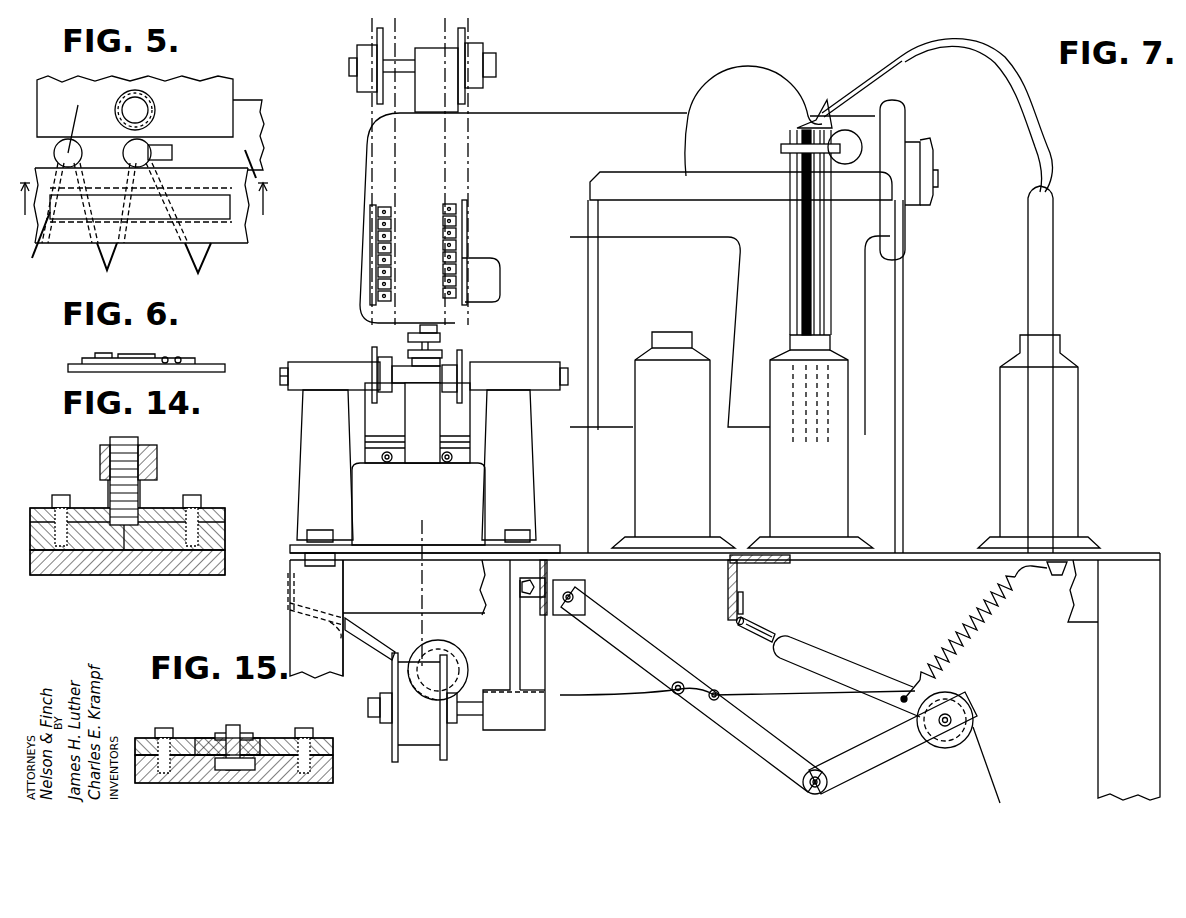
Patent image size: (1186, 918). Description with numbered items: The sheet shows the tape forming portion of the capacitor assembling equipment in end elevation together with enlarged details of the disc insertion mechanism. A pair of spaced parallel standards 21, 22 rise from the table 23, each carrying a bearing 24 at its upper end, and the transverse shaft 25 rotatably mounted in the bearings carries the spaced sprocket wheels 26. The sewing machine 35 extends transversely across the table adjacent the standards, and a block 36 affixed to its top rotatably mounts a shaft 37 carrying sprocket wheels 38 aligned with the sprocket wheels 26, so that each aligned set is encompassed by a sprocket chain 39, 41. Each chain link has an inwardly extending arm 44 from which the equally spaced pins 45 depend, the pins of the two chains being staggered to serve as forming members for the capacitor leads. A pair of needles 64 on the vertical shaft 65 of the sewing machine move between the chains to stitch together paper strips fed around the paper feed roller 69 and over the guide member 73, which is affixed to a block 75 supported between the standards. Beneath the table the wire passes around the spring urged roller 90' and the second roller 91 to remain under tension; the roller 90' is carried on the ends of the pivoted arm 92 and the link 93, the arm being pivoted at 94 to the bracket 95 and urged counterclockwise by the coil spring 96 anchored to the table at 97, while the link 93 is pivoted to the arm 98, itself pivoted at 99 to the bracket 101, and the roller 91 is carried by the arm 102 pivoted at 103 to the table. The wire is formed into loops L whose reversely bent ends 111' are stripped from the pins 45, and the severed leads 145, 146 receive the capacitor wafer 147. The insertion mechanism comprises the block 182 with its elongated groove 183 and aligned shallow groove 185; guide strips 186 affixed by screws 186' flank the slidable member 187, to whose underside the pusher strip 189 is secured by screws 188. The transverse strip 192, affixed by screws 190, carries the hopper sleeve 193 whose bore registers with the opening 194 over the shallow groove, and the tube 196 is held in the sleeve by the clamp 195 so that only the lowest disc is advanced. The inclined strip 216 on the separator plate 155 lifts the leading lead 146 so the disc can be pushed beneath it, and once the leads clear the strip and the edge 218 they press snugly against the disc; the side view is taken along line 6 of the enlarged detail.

In FIG. 5, the section line 6— 6 is at (143, 212).
In FIG. 5, the loop L is at (100, 262).
In FIG. 5, the reversely bent end of loop 111' is at (179, 261).
In FIG. 5, the lead 145 is at (66, 140).
In FIG. 5, the leading lead 146 is at (128, 143).
In FIG. 6, the leading lead 146 is at (105, 355).
In FIG. 5, the capacitor wafer 147 is at (80, 118).
In FIG. 6, the capacitor wafer 147 is at (85, 366).
In FIG. 5, the separator plate 155 is at (250, 130).
In FIG. 6, the separator plate 155 is at (226, 369).
In FIG. 5, the inclined strip 216 is at (172, 153).
In FIG. 6, the inclined strip 216 is at (140, 357).
In FIG. 5, the edge of separator plate 218 is at (150, 140).
In FIG. 14, the block 182 is at (222, 556).
In FIG. 15, the block 182 is at (334, 765).
In FIG. 15, the elongated rectangular groove 183 is at (218, 767).
In FIG. 14, the shallow groove 185 is at (128, 540).
In FIG. 15, the guide strip 186 is at (246, 734).
In FIG. 15, the screw 186' is at (211, 717).
In FIG. 15, the slidable member 187 is at (222, 738).
In FIG. 15, the screw 188 is at (248, 770).
In FIG. 14, the pusher strip 189 is at (180, 565).
In FIG. 15, the pusher strip 189 is at (268, 740).
In FIG. 14, the screw 190 is at (60, 495).
In FIG. 14, the transverse strip 192 is at (78, 515).
In FIG. 14, the sleeve 193 is at (142, 488).
In FIG. 14, the opening 194 is at (95, 512).
In FIG. 14, the clamp 195 is at (157, 464).
In FIG. 14, the tube 196 is at (138, 440).
In FIG. 7, the standard 21 is at (518, 475).
In FIG. 7, the standard 22 is at (305, 450).
In FIG. 7, the table 23 is at (296, 548).
In FIG. 7, the bearing 24 is at (318, 360).
In FIG. 7, the transverse shaft 25 is at (283, 386).
In FIG. 7, the sprocket wheel 26 is at (373, 348).
In FIG. 7, the sewing machine 35 is at (362, 162).
In FIG. 7, the block 36 is at (418, 100).
In FIG. 7, the shaft 37 is at (497, 65).
In FIG. 7, the sprocket wheel 38 is at (468, 32).
In FIG. 7, the sprocket chain 39 is at (372, 255).
In FIG. 7, the sprocket chain 41 is at (468, 218).
In FIG. 7, the arm 44 is at (400, 258).
In FIG. 7, the pin 45 is at (462, 270).
In FIG. 7, the needle 64 is at (412, 392).
In FIG. 7, the vertical shaft 65 is at (445, 343).
In FIG. 7, the paper feed roller 69 is at (422, 748).
In FIG. 7, the guide member 73 is at (428, 450).
In FIG. 7, the block 75 is at (390, 465).
In FIG. 7, the spring urged roller 90' is at (967, 718).
In FIG. 7, the second roller 91 is at (458, 652).
In FIG. 7, the pivoted arm 92 is at (850, 660).
In FIG. 7, the link 93 is at (896, 755).
In FIG. 7, the pivot 94 is at (740, 626).
In FIG. 7, the bracket 95 is at (728, 585).
In FIG. 7, the coil spring 96 is at (960, 632).
In FIG. 7, the spring anchorage 97 is at (1052, 578).
In FIG. 7, the arm 98 is at (645, 650).
In FIG. 7, the pivot 99 is at (582, 594).
In FIG. 7, the bracket 101 is at (556, 615).
In FIG. 7, the arm 102 is at (370, 645).
In FIG. 7, the pivot 103 is at (288, 618).